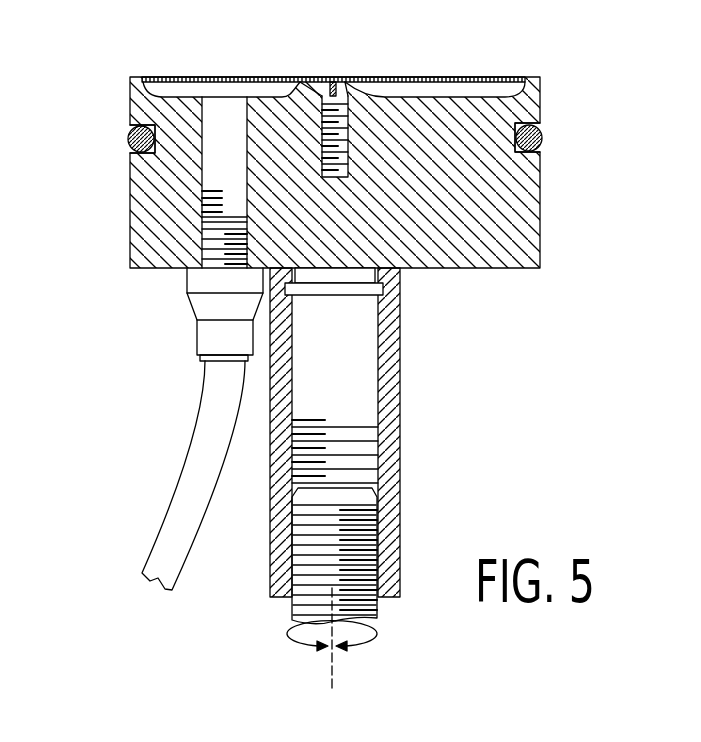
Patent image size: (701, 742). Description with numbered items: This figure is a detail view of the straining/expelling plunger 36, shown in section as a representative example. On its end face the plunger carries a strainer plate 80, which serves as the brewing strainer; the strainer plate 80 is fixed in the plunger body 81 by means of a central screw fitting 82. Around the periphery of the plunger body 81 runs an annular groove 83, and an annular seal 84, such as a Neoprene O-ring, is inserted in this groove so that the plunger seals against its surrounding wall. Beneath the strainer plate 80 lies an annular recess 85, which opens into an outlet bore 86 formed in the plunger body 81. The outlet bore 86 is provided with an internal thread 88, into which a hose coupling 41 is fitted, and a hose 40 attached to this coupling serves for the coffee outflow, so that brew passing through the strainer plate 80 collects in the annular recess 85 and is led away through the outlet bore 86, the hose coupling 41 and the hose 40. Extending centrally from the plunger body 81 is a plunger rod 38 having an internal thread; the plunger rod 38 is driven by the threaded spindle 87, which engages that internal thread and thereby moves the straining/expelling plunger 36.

The straining/expelling plunger 36 is at (346, 134).
The plunger rod 38 is at (388, 372).
The hose 40 is at (213, 424).
The hose coupling 41 is at (205, 308).
The strainer plate 80 is at (477, 75).
The plunger body 81 is at (495, 233).
The central screw fitting 82 is at (323, 83).
The annular groove 83 is at (130, 127).
The annular seal 84 is at (127, 145).
The annular recess 85 is at (254, 90).
The outlet bore 86 is at (219, 125).
The threaded spindle 87 is at (305, 608).
The internal thread 88 is at (227, 213).